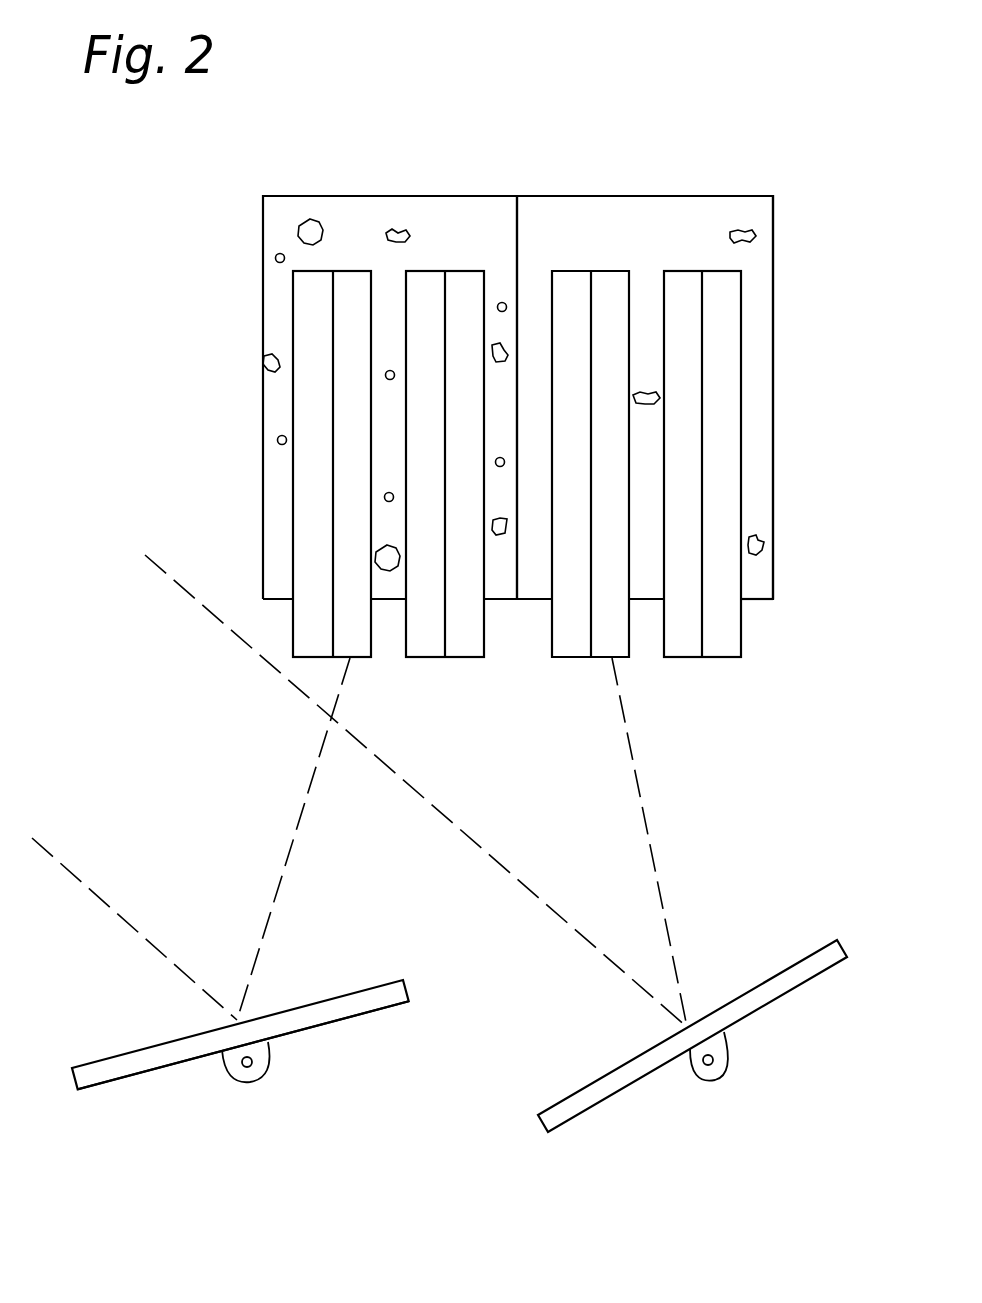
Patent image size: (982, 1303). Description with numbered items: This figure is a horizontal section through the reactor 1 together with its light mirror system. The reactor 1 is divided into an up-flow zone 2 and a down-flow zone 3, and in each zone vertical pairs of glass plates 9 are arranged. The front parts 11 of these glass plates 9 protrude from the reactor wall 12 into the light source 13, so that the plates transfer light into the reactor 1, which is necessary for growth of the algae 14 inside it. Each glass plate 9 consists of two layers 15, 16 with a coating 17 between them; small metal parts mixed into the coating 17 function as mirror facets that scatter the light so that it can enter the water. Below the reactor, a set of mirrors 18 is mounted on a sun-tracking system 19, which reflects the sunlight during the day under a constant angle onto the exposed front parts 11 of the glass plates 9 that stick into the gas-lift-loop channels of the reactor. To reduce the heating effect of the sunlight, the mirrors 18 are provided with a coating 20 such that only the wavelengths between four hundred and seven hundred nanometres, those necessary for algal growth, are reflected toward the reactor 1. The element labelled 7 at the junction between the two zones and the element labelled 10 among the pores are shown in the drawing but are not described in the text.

The reactor 1 is at (773, 218).
The up-flow zone 2 is at (280, 477).
The down-flow zone 3 is at (758, 453).
The dividing joint 7 is at (517, 235).
The glass plates 9 is at (720, 320).
The pore 10 is at (310, 230).
The front parts 11 is at (463, 658).
The reactor wall 12 is at (757, 600).
The light source 13 is at (292, 840).
The algae 14 is at (270, 367).
The layer 15 is at (562, 286).
The layer 16 is at (622, 287).
The coating 17 is at (593, 283).
The mirrors 18 is at (360, 1000).
The sun-tracking system 19 is at (242, 1072).
The coating 20 is at (345, 1017).